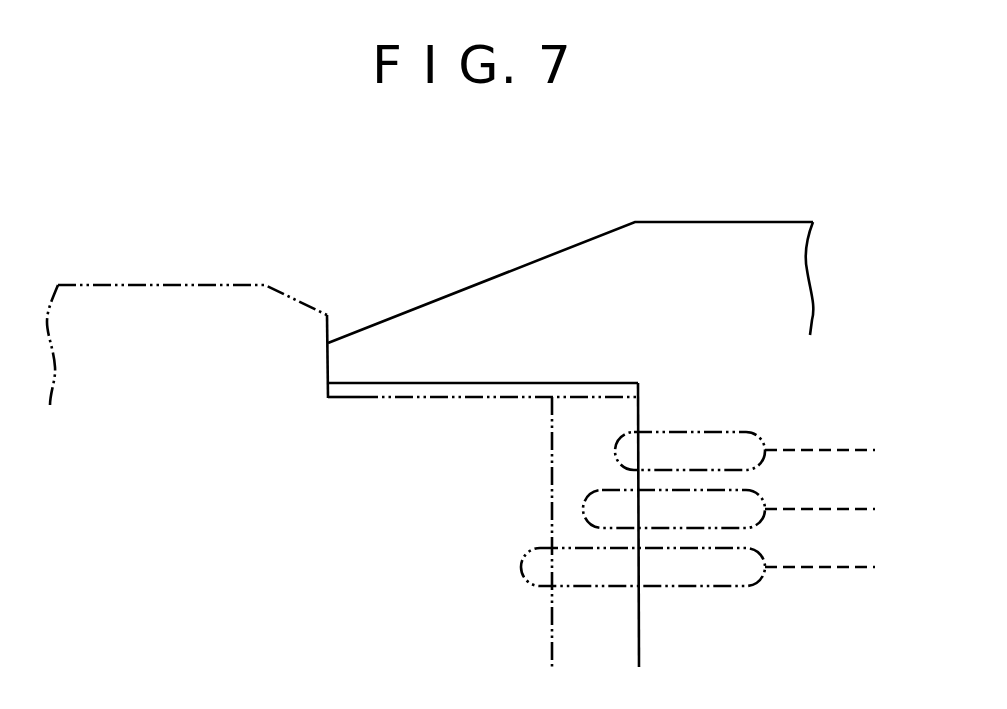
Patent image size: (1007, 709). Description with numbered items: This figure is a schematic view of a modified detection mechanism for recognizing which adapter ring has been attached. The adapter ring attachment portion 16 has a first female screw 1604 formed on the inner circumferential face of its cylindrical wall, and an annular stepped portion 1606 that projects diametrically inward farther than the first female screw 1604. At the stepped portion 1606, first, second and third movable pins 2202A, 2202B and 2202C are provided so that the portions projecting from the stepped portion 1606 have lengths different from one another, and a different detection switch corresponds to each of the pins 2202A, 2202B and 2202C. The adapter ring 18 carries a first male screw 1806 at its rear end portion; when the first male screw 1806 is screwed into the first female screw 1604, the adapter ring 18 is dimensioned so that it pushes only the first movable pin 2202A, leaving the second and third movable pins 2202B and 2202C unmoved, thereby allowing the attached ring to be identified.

The adapter ring 18 is at (182, 283).
The adapter ring attachment portion 16 is at (555, 252).
The first female screw 1604 is at (390, 385).
The annular stepped portion 1606 is at (636, 414).
The first male screw 1806 is at (472, 393).
The first movable pin 2202A is at (748, 432).
The second movable pin 2202B is at (750, 492).
The third movable pin 2202C is at (753, 549).